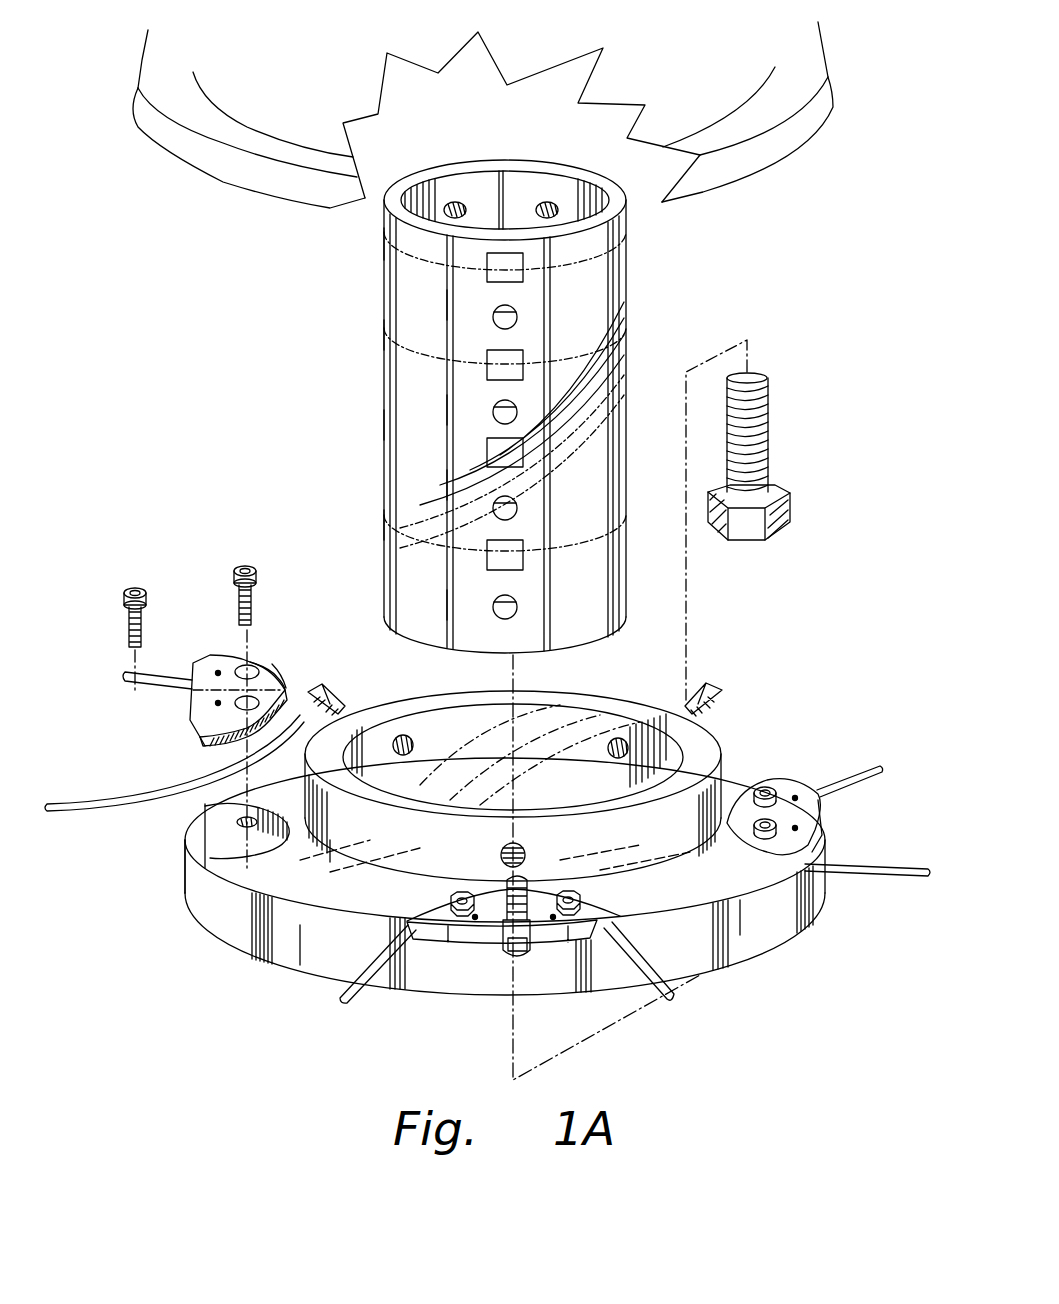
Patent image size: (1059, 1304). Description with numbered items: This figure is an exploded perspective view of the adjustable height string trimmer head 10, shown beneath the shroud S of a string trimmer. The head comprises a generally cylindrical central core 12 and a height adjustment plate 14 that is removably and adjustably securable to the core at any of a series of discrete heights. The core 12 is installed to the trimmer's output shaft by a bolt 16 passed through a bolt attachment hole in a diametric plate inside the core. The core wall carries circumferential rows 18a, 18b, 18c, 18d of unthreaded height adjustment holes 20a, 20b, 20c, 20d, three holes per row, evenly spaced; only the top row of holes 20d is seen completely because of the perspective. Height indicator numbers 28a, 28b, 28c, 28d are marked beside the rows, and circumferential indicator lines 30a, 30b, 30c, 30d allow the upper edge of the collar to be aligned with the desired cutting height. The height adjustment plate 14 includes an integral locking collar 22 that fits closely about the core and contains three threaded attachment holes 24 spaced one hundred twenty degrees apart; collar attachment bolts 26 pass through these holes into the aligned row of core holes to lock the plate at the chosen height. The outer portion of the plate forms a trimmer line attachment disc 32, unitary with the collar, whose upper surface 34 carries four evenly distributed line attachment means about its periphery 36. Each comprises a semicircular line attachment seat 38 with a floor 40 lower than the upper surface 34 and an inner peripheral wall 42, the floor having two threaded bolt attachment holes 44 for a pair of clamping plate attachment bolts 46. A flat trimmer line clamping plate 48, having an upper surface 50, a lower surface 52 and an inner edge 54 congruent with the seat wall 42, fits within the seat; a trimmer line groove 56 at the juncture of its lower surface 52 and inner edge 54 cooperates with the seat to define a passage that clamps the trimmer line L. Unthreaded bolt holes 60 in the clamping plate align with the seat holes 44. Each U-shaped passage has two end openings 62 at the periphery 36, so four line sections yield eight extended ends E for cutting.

The shroud S is at (170, 183).
The trimming head 10 is at (245, 1062).
The central core 12 is at (668, 282).
The height adjustment plate 14 is at (760, 992).
The bolt 16 is at (770, 466).
The row of height adjustment holes 18a is at (467, 603).
The row of height adjustment holes 18b is at (437, 487).
The row of height adjustment holes 18c is at (463, 408).
The row of height adjustment holes 18d is at (465, 303).
The height adjustment holes 20a is at (518, 611).
The height adjustment holes 20b is at (518, 512).
The height adjustment holes 20c is at (518, 416).
The height adjustment holes 20d is at (518, 321).
The locking collar 22 is at (645, 853).
The locking collar attachment holes 24 is at (413, 745).
The collar attachment bolts 26 is at (336, 690).
The height indicator number 28a is at (523, 570).
The height indicator number 28b is at (523, 467).
The height indicator number 28c is at (523, 380).
The height indicator number 28d is at (523, 282).
The plate height adjustment indicator line 30a is at (378, 518).
The plate height adjustment indicator line 30b is at (378, 418).
The plate height adjustment indicator line 30c is at (388, 329).
The plate height adjustment indicator line 30d is at (390, 239).
The trimmer line attachment disc 32 is at (780, 928).
The upper surface 34 is at (322, 862).
The periphery 36 is at (318, 957).
The line attachment seat 38 is at (190, 824).
The floor 40 is at (205, 870).
The inner peripheral wall 42 is at (240, 806).
The clamping plate bolt attachment holes 44 is at (244, 825).
The clamping plate attachment bolts 46 is at (232, 578).
The trimmer line clamping plate 48 is at (208, 656).
The upper surface 50 is at (198, 702).
The lower surface 52 is at (207, 737).
The inner edge 54 is at (280, 642).
The trimmer line groove 56 is at (200, 745).
The bolt holes 60 is at (268, 683).
The end openings 62 is at (408, 932).
The extended ends E is at (122, 680).
The trimmer line L is at (52, 812).